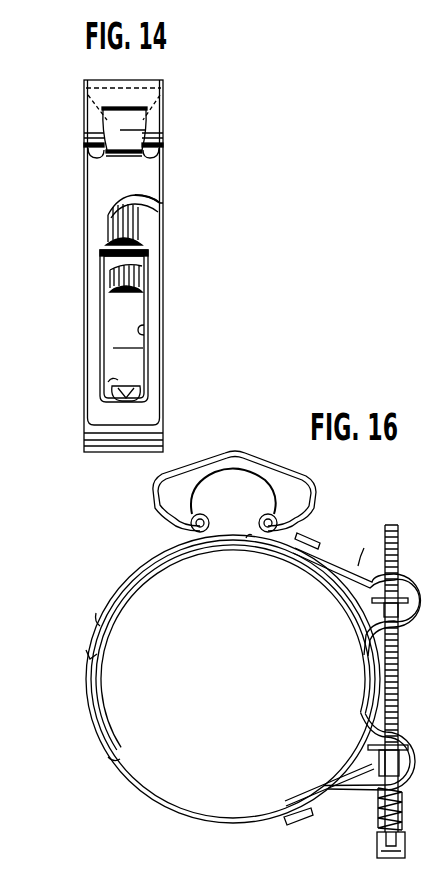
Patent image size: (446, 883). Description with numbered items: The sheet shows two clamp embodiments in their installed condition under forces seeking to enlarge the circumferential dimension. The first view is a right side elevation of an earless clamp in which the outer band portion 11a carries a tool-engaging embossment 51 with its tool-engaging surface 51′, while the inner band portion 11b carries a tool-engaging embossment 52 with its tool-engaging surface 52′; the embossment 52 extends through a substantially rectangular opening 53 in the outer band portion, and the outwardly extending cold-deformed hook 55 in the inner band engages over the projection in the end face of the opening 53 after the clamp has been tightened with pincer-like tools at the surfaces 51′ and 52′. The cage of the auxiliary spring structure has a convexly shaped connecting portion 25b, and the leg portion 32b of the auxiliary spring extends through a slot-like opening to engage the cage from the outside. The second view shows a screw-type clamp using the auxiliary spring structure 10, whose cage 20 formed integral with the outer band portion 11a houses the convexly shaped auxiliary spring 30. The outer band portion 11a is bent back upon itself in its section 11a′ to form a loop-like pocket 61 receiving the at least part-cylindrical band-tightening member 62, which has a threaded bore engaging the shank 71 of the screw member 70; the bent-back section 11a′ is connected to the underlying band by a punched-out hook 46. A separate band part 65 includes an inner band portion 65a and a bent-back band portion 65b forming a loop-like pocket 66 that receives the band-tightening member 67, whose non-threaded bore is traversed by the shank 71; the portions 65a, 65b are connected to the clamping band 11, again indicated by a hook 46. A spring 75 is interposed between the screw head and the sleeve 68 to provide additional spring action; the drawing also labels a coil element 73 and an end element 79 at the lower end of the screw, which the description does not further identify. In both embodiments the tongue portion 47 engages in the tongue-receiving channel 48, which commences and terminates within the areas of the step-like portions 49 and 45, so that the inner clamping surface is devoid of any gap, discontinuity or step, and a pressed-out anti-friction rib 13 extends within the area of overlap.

In FIG. 14, the auxiliary spring structure 10 is at (181, 86).
In FIG. 16, the auxiliary spring structure 10 is at (236, 451).
In FIG. 16, the clamping band 11 is at (136, 786).
In FIG. 16, the outer band portion 11a is at (333, 574).
In FIG. 16, the bent-back outer band section 11a′ is at (358, 566).
In FIG. 16, the inner band portion 11b is at (188, 562).
In FIG. 16, the anti-friction rib 13 is at (249, 541).
In FIG. 16, the cage 20 is at (283, 468).
In FIG. 14, the convexly shaped connecting portion 25b is at (84, 154).
In FIG. 16, the auxiliary spring 30 is at (263, 488).
In FIG. 14, the leg portion 32b is at (118, 160).
In FIG. 16, the step-like portion 45 is at (110, 758).
In FIG. 16, the hook 46 is at (320, 532).
In FIG. 16, the tongue portion 47 is at (125, 590).
In FIG. 16, the tongue-receiving channel 48 is at (88, 659).
In FIG. 16, the step-like portion 49 is at (97, 619).
In FIG. 14, the tool-engaging embossment 51 is at (130, 225).
In FIG. 14, the tool-engaging surface 51′ is at (158, 198).
In FIG. 14, the tool-engaging embossment 52 is at (140, 274).
In FIG. 14, the tool-engaging surface 52′ is at (124, 291).
In FIG. 14, the rectangular opening 53 is at (144, 339).
In FIG. 14, the hook 55 is at (114, 388).
In FIG. 16, the loop-like pocket 61 is at (416, 580).
In FIG. 16, the band-tightening member 62 is at (378, 604).
In FIG. 16, the separate band part 65 is at (408, 741).
In FIG. 16, the inner band portion 65a is at (366, 757).
In FIG. 16, the bent-back band portion 65b is at (358, 773).
In FIG. 16, the loop-like pocket 66 is at (404, 716).
In FIG. 16, the band-tightening member 67 is at (372, 743).
In FIG. 16, the sleeve 68 is at (380, 748).
In FIG. 16, the screw member 70 is at (398, 659).
In FIG. 16, the shank 71 is at (399, 673).
In FIG. 16, the spring 73 is at (408, 812).
In FIG. 16, the spring 75 is at (381, 822).
In FIG. 16, the screw head 79 is at (384, 846).